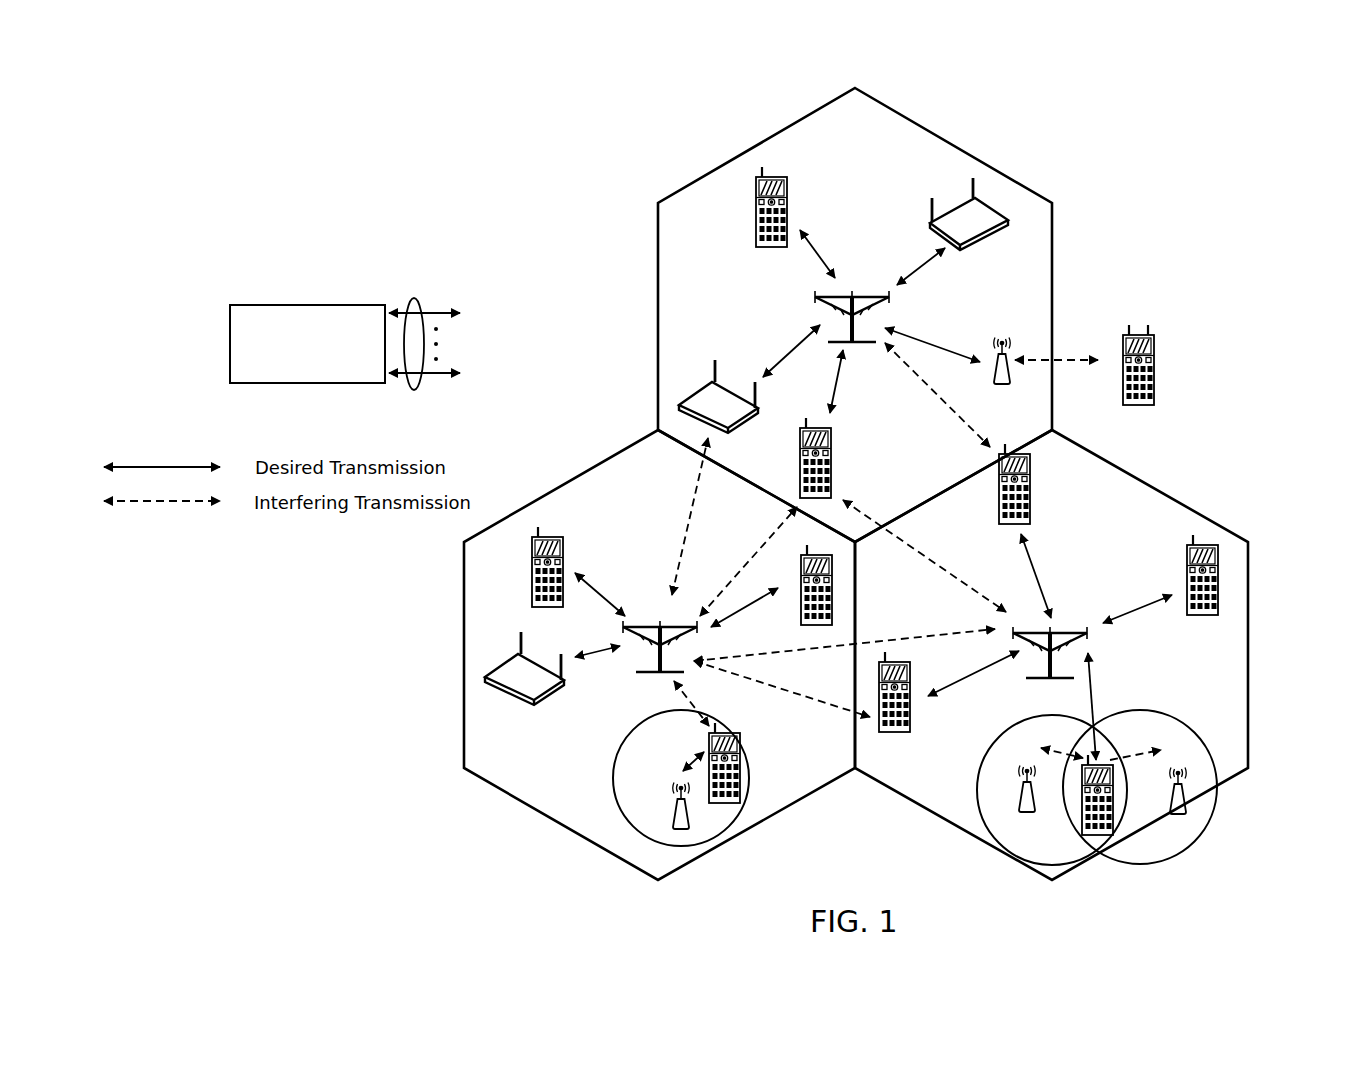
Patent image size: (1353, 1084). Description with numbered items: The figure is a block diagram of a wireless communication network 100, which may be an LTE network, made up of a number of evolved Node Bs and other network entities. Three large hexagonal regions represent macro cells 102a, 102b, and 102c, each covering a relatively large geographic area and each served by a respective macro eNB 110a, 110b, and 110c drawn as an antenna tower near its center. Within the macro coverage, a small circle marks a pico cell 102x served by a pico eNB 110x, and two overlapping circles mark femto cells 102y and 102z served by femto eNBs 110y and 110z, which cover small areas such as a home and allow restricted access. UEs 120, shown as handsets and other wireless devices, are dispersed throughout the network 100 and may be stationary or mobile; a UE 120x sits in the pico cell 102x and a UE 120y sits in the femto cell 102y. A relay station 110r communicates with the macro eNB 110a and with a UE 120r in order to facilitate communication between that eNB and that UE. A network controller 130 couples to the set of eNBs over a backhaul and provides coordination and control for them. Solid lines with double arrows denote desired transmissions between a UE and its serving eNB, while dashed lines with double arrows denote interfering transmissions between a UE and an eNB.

The wireless communication network 100 is at (764, 500).
The network controller 130 is at (308, 305).
The macro cell 102a is at (900, 113).
The macro cell 102b is at (599, 461).
The macro cell 102c is at (1124, 461).
The macro eNB 110a is at (865, 297).
The macro eNB 110b is at (651, 623).
The macro eNB 110c is at (1064, 627).
The relay station 110r is at (1010, 378).
The UE 120r is at (1155, 345).
The UEs 120 is at (756, 180).
The pico cell 102x is at (623, 733).
The pico eNB 110x is at (689, 823).
The UE 120x is at (739, 748).
The femto cell 102y is at (1027, 715).
The femto cell 102z is at (1140, 707).
The femto eNB 110y is at (1027, 810).
The femto eNB 110z is at (1189, 795).
The UE 120y is at (1097, 836).